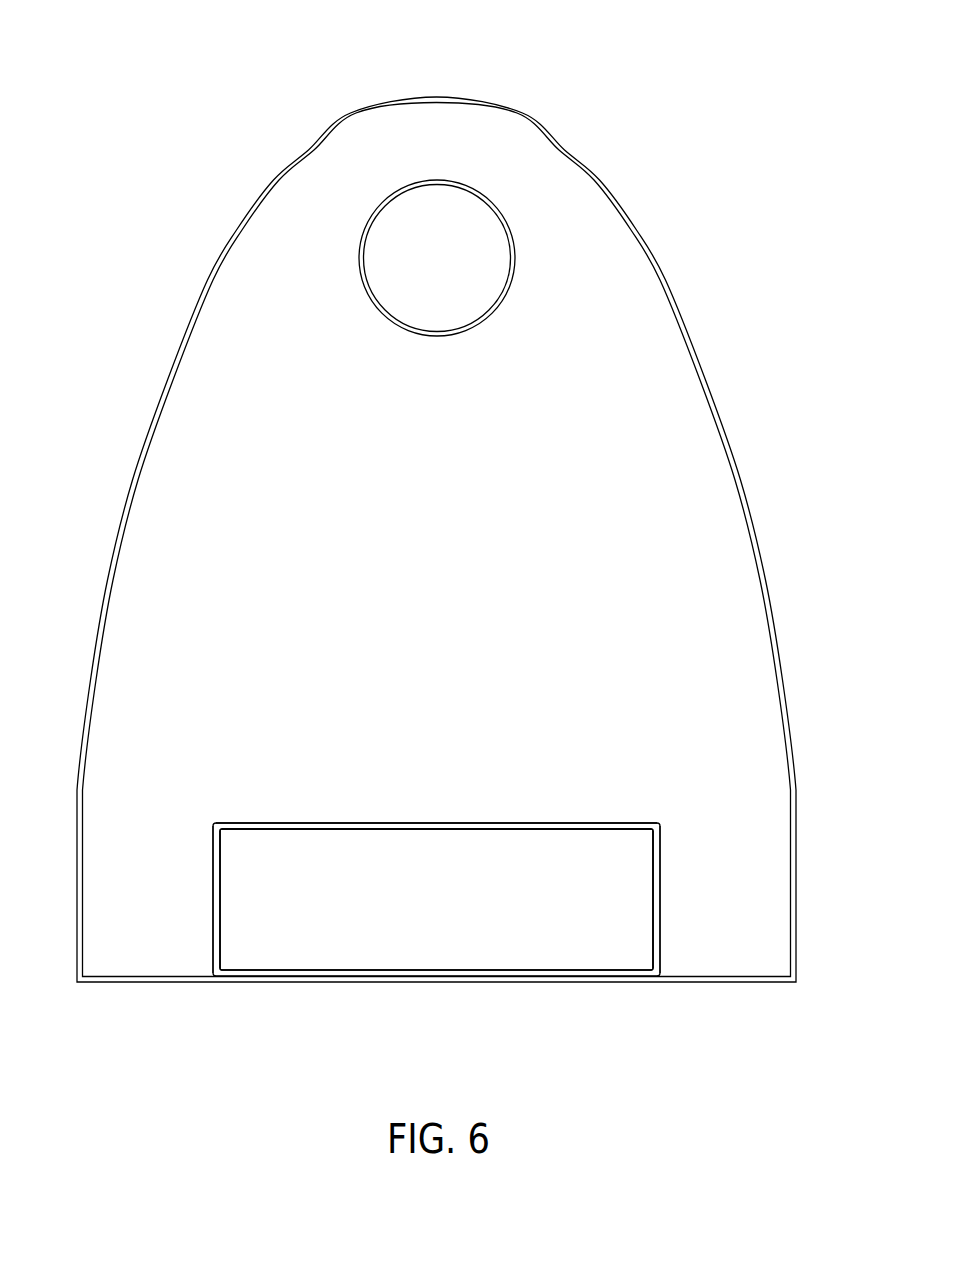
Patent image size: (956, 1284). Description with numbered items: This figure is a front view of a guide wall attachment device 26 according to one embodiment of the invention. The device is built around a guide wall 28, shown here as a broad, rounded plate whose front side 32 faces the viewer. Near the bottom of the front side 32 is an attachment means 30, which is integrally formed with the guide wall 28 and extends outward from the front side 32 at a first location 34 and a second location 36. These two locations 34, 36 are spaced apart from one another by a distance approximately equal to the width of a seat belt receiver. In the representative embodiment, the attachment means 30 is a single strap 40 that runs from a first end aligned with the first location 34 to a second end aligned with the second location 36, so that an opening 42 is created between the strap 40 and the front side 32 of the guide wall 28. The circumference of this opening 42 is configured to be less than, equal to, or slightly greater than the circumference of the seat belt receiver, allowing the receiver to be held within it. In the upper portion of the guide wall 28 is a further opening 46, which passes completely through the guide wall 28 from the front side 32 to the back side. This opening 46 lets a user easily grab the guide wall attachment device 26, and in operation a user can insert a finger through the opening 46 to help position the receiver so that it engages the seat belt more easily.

The guide wall attachment device 26 is at (191, 175).
The guide wall 28 is at (640, 380).
The opening 46 is at (437, 257).
The front side 32 is at (461, 634).
The attachment means 30 is at (540, 940).
The single strap 40 is at (275, 910).
The first location 34 is at (222, 806).
The opening 42 is at (548, 793).
The second location 36 is at (659, 805).